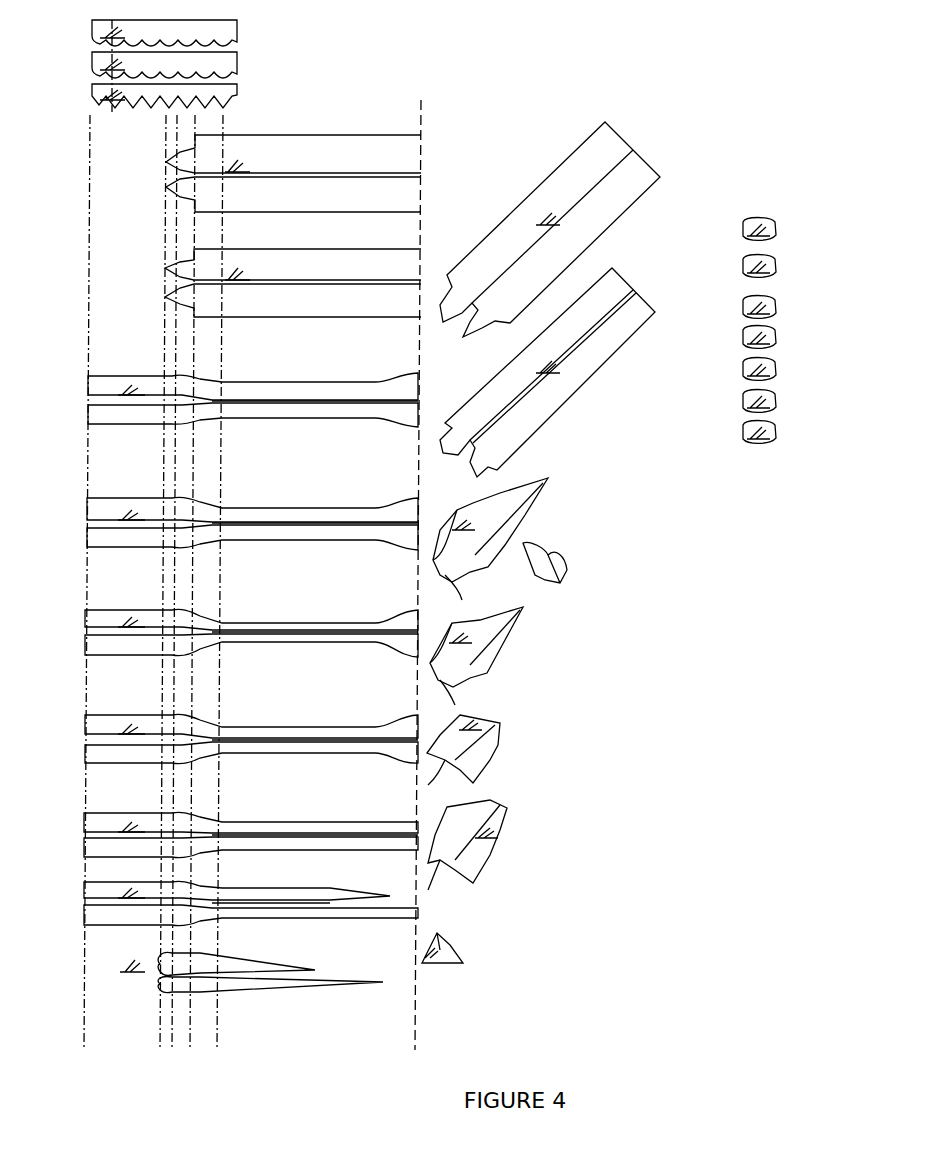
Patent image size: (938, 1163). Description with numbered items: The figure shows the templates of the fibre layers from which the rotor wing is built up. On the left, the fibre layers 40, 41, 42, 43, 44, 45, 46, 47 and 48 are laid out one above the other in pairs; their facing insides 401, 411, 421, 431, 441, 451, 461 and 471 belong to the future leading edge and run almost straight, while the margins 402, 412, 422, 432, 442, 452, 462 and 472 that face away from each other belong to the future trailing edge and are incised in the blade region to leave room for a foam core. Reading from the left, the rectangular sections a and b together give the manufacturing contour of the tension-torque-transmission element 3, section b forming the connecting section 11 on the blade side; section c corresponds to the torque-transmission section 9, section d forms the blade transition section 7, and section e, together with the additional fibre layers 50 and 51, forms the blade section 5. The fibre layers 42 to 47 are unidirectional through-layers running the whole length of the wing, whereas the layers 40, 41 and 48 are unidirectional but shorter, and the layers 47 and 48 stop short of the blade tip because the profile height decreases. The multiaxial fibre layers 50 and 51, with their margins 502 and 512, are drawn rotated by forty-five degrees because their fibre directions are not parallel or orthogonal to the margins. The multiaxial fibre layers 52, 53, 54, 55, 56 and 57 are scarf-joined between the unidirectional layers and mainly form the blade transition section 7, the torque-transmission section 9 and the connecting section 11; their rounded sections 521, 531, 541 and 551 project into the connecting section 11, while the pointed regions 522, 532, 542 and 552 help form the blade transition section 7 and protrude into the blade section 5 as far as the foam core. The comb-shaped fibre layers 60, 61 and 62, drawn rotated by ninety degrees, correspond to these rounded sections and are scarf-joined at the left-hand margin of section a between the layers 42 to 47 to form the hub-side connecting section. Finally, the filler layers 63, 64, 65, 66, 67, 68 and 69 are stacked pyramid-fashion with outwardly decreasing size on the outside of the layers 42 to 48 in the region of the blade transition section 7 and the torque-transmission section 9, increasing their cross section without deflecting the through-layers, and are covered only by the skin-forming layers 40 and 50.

The fibre layer 40 is at (160, 188).
The inside of fibre layer 40 401 is at (421, 178).
The margin of fibre layer 40 402 is at (431, 120).
The fibre layer 41 is at (146, 293).
The inside of fibre layer 41 411 is at (350, 283).
The margin of fibre layer 41 412 is at (318, 249).
The fibre layer 42 is at (83, 383).
The inside of fibre layer 42 421 is at (340, 402).
The margin of fibre layer 42 422 is at (243, 380).
The fibre layer 43 is at (83, 500).
The inside of fibre layer 43 431 is at (345, 521).
The margin of fibre layer 43 432 is at (300, 507).
The fibre layer 44 is at (82, 613).
The inside of fibre layer 44 441 is at (345, 633).
The margin of fibre layer 44 442 is at (325, 623).
The fibre layer 45 is at (82, 718).
The inside of fibre layer 45 451 is at (345, 742).
The margin of fibre layer 45 452 is at (300, 727).
The fibre layer 46 is at (100, 823).
The inside of fibre layer 46 461 is at (327, 843).
The margin of fibre layer 46 462 is at (298, 822).
The fibre layer 47 is at (80, 881).
The inside of fibre layer 47 471 is at (377, 920).
The margin of fibre layer 47 472 is at (270, 884).
The fibre layer 48 is at (140, 978).
The connecting section on the blade side 11 is at (170, 1015).
The fibre layer 50 is at (590, 119).
The margin of fibre layer 50 502 is at (547, 178).
The fibre layer 51 is at (625, 264).
The margin of fibre layer 51 512 is at (527, 353).
The fibre layer 52 is at (538, 519).
The rounded section of fibre layer 52 521 is at (482, 583).
The pointed region of fibre layer 52 522 is at (548, 478).
The fibre layer 53 is at (516, 650).
The rounded section of fibre layer 53 531 is at (476, 688).
The pointed region of fibre layer 53 532 is at (512, 608).
The fibre layer 54 is at (508, 742).
The rounded section of fibre layer 54 541 is at (473, 770).
The pointed region of fibre layer 54 542 is at (498, 718).
The fibre layer 55 is at (509, 846).
The rounded section of fibre layer 55 551 is at (475, 867).
The pointed region of fibre layer 55 552 is at (500, 805).
The fibre layer 56 is at (467, 964).
The fibre layer 57 is at (578, 565).
The comb-shaped fibre layer 60 is at (240, 28).
The comb-shaped fibre layer 61 is at (237, 60).
The comb-shaped fibre layer 62 is at (238, 88).
The filler layer 63 is at (776, 232).
The filler layer 64 is at (776, 268).
The filler layer 65 is at (776, 315).
The filler layer 66 is at (776, 345).
The filler layer 67 is at (776, 372).
The filler layer 68 is at (776, 400).
The filler layer 69 is at (770, 441).
The tension-torque-transmission element 3 is at (158, 1032).
The blade section 5 is at (415, 1045).
The blade transition section 7 is at (217, 1032).
The torque-transmission section 9 is at (158, 1032).
The rectangular section a is at (166, 122).
The section b is at (177, 116).
The section c is at (195, 126).
The section d is at (223, 117).
The section e is at (223, 117).